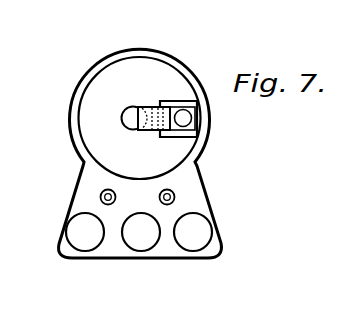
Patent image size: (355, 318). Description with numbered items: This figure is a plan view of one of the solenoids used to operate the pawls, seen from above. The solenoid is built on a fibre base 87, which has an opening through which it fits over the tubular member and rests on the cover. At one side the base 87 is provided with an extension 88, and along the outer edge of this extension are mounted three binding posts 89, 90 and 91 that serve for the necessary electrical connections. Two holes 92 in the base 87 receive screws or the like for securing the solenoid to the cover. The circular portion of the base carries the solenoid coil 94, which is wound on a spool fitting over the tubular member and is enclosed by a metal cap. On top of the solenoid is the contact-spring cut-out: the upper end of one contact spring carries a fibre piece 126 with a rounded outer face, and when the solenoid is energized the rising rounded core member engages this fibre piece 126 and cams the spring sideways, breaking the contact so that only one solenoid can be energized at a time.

The fibre base 87 is at (208, 140).
The extension 88 is at (198, 192).
The binding post 89 is at (85, 240).
The binding post 90 is at (142, 238).
The binding post 91 is at (198, 235).
The holes 92 is at (160, 193).
The solenoid coil 94 is at (85, 104).
The fibre piece 126 is at (145, 107).